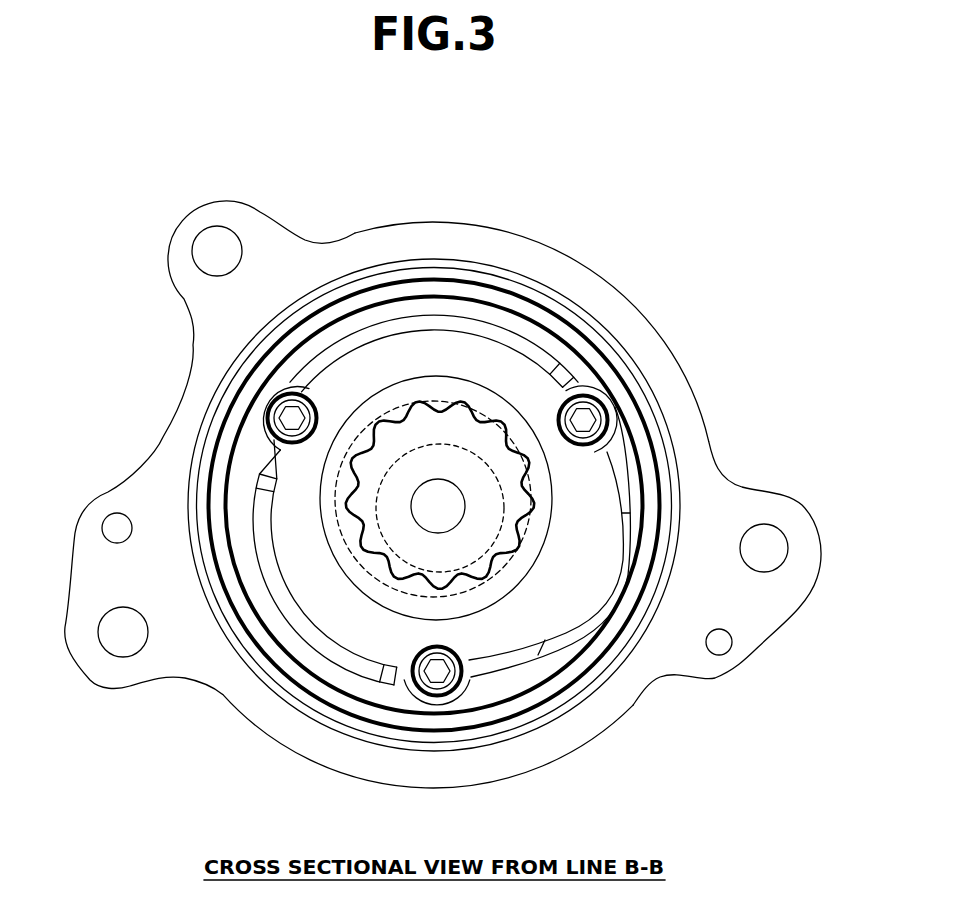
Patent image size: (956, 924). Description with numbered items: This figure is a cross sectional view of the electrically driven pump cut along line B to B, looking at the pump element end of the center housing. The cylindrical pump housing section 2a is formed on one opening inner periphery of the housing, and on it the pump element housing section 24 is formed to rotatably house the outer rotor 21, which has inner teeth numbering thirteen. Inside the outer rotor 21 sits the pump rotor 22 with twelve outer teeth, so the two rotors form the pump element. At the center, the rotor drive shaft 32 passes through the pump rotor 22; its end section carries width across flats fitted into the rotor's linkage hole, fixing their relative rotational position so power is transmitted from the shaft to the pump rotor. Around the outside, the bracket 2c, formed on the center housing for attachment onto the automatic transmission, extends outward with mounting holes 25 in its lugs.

The pump housing section 2a is at (282, 500).
The bracket 2c is at (757, 607).
The outer rotor 21 is at (440, 393).
The pump rotor 22 is at (480, 480).
The pump element housing section 24 is at (540, 533).
The bolt holes 25 is at (234, 236).
The rotor drive shaft 32 is at (437, 507).